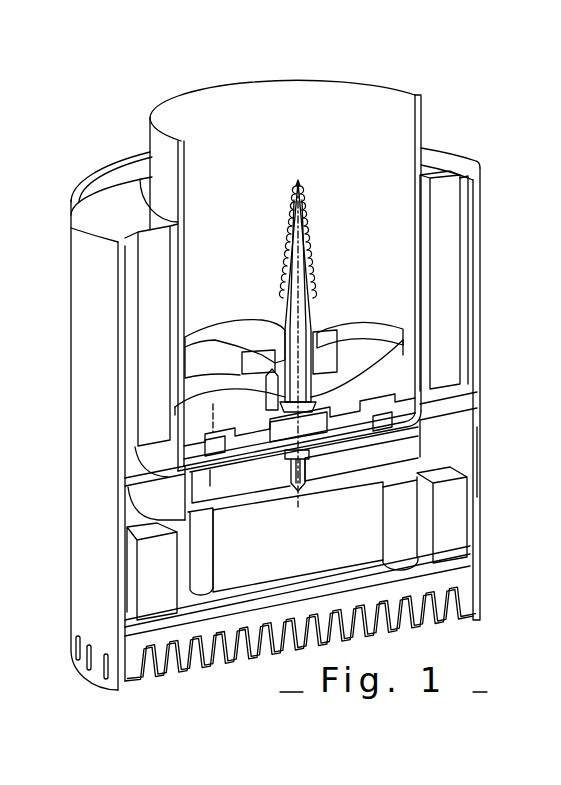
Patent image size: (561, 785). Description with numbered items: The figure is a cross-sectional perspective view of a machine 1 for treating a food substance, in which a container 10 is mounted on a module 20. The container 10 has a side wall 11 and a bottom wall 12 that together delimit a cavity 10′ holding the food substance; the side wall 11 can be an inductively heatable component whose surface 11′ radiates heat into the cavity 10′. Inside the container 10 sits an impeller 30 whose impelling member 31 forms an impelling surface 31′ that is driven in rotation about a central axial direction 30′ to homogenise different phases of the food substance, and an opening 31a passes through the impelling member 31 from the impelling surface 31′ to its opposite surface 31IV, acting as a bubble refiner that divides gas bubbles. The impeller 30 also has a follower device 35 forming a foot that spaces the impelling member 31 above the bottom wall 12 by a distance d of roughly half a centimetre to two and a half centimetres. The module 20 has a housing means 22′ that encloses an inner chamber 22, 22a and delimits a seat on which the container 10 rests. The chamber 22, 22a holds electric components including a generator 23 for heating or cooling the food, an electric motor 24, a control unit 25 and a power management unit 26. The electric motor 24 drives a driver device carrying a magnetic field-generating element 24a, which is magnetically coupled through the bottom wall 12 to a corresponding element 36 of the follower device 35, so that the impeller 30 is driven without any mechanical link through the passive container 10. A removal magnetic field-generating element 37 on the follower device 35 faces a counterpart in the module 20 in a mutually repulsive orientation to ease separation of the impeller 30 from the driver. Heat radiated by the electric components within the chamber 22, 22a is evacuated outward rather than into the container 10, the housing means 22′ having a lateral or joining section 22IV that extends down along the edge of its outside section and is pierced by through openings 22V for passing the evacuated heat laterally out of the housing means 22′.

The machine 1 is at (113, 68).
The container 10 is at (433, 107).
The cavity 10′ is at (281, 110).
The side wall 11 is at (218, 82).
The surface 11′ is at (413, 257).
The bottom wall 12 is at (560, 342).
The distance d is at (398, 370).
The module 20 is at (62, 360).
The inner chamber 22 is at (450, 460).
The housing means 22′ is at (82, 268).
The inner chamber 22a is at (465, 218).
The generator 23 is at (448, 293).
The joining section 22IV is at (80, 510).
The through openings 22V is at (100, 673).
The electric motor 24 is at (375, 555).
The magnetic field-generating element 24a is at (218, 472).
The control unit 25 is at (450, 530).
The power management unit 26 is at (150, 565).
The impeller 30 is at (316, 186).
The central axial direction 30′ is at (298, 168).
The impelling member 31 is at (371, 323).
The impelling surface 31′ is at (264, 273).
The opening 31a is at (212, 333).
The opposite surface 31IV is at (200, 383).
The follower device 35 is at (392, 403).
The magnetic field-generating element 36 is at (380, 418).
The removal magnetic field-generating element 37 is at (303, 425).